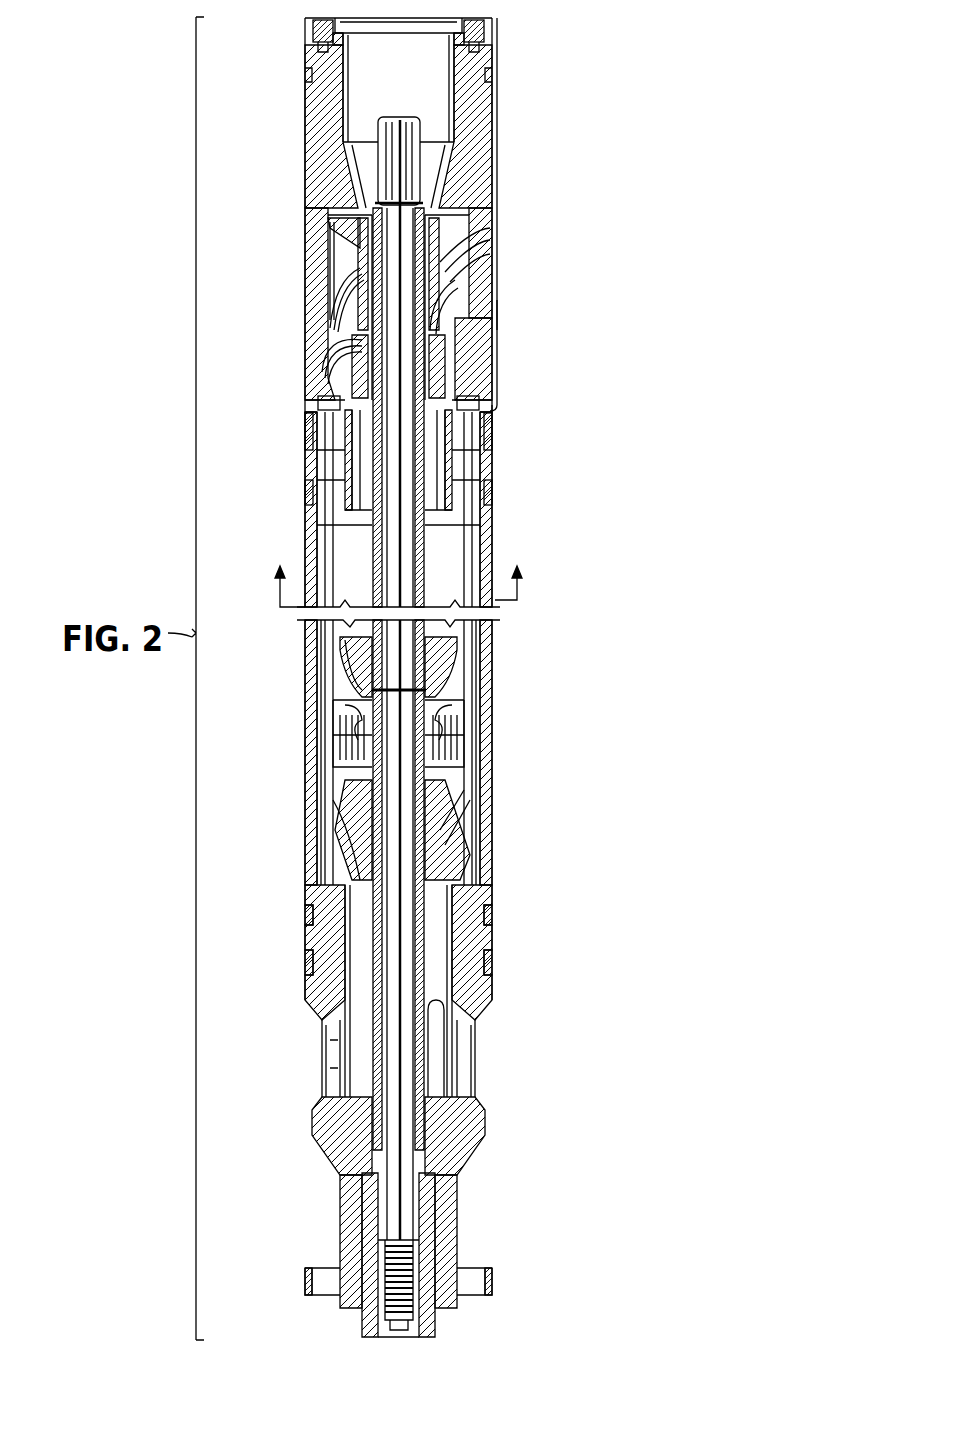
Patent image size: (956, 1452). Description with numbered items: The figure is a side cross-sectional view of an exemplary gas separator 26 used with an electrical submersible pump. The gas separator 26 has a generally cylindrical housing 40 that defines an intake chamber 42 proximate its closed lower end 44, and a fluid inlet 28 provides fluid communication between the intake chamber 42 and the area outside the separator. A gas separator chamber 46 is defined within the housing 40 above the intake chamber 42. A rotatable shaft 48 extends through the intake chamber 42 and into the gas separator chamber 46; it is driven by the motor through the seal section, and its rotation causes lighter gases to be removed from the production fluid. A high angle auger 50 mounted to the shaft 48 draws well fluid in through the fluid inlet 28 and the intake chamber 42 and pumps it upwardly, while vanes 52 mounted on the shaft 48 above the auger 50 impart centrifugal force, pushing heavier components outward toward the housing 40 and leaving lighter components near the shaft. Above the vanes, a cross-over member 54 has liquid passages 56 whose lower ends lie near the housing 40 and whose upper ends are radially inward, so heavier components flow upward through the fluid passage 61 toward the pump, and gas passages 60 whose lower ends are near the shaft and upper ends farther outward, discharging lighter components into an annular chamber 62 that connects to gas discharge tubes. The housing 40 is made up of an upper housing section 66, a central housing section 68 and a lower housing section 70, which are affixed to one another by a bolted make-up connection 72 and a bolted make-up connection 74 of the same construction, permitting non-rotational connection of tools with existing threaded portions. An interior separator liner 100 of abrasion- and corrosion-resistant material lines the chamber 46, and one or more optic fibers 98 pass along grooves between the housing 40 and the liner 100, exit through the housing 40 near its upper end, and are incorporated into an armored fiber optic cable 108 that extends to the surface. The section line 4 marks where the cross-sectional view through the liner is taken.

The gas separator 26 is at (516, 453).
The fluid inlet 28 is at (330, 1022).
The housing 40 is at (302, 560).
The intake chamber 42 is at (445, 1025).
The closed lower end 44 is at (445, 1090).
The gas separator chamber 46 is at (463, 596).
The rotatable shaft 48 is at (425, 553).
The high angle auger 50 is at (460, 823).
The vanes 52 is at (325, 718).
The cross-over member 54 is at (480, 395).
The liquid passages 56 is at (305, 400).
The gas passages 60 is at (305, 505).
The fluid passage 61 is at (352, 90).
The annular chamber 62 is at (322, 350).
The upper housing section 66 is at (308, 190).
The central housing section 68 is at (305, 633).
The lower housing section 70 is at (462, 1067).
The bolted make-up connection 72 is at (514, 315).
The bolted make-up connection 74 is at (487, 939).
The optic fiber 98 is at (492, 272).
The interior separator liner 100 is at (315, 680).
The fiber optic cable 108 is at (497, 100).
The section line 4- 4 is at (399, 592).